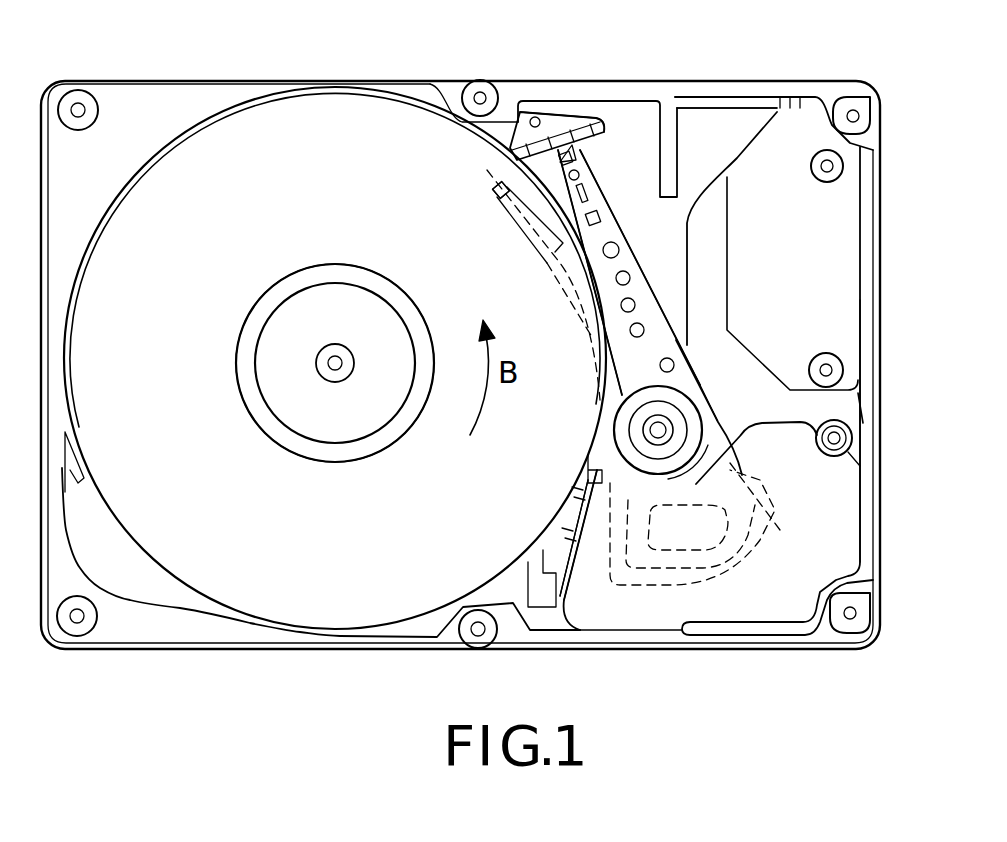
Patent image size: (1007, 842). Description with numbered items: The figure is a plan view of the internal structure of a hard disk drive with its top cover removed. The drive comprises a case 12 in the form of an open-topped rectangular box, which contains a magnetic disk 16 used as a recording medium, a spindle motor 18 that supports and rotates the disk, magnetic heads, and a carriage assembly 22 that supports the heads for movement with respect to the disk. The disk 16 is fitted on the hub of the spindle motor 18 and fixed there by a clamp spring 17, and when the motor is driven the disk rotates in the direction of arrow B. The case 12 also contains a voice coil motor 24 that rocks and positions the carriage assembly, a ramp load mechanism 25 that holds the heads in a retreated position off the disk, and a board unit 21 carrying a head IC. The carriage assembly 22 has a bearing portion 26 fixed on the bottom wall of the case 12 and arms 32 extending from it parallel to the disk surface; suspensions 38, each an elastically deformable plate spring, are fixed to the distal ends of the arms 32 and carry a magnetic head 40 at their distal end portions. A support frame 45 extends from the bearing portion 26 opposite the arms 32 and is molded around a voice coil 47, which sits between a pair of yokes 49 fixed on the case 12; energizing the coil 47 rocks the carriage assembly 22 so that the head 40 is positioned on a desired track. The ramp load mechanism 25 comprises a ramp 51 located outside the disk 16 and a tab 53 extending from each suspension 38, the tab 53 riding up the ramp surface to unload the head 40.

The case 12 is at (157, 98).
The magnetic disk 16 is at (334, 112).
The clamp spring 17 is at (336, 433).
The spindle motor 18 is at (212, 373).
The board unit 21 is at (774, 143).
The carriage assembly 22 is at (655, 242).
The voice coil motor 24 is at (592, 520).
The ramp load mechanism 25 is at (545, 103).
The bearing portion 26 is at (625, 437).
The arms 32 is at (660, 338).
The suspension 38 is at (598, 186).
The magnetic head 40 is at (494, 198).
The support frame 45 is at (760, 530).
The voice coil 47 is at (666, 560).
The yokes 49 is at (859, 504).
The ramp 51 is at (588, 135).
The tab 53 is at (492, 182).